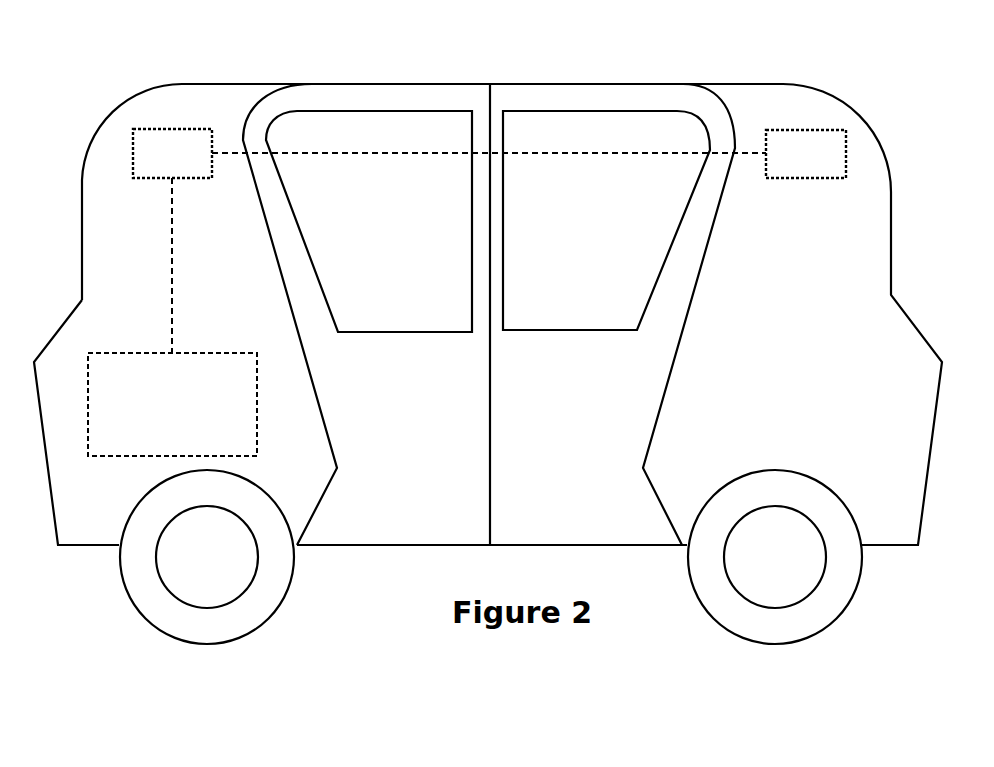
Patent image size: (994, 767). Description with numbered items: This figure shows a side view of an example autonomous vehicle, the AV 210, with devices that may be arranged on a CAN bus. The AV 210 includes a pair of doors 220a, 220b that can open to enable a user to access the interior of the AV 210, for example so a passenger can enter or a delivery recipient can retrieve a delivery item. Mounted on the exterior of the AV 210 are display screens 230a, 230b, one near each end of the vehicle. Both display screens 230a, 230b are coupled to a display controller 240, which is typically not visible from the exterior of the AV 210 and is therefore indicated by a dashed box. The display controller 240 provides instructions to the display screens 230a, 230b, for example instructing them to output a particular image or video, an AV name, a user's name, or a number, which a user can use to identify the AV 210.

The AV 210 is at (787, 61).
The door 220a is at (367, 95).
The door 220b is at (557, 97).
The display screen 230a is at (130, 153).
The display screen 230b is at (848, 148).
The display controller 240 is at (172, 317).